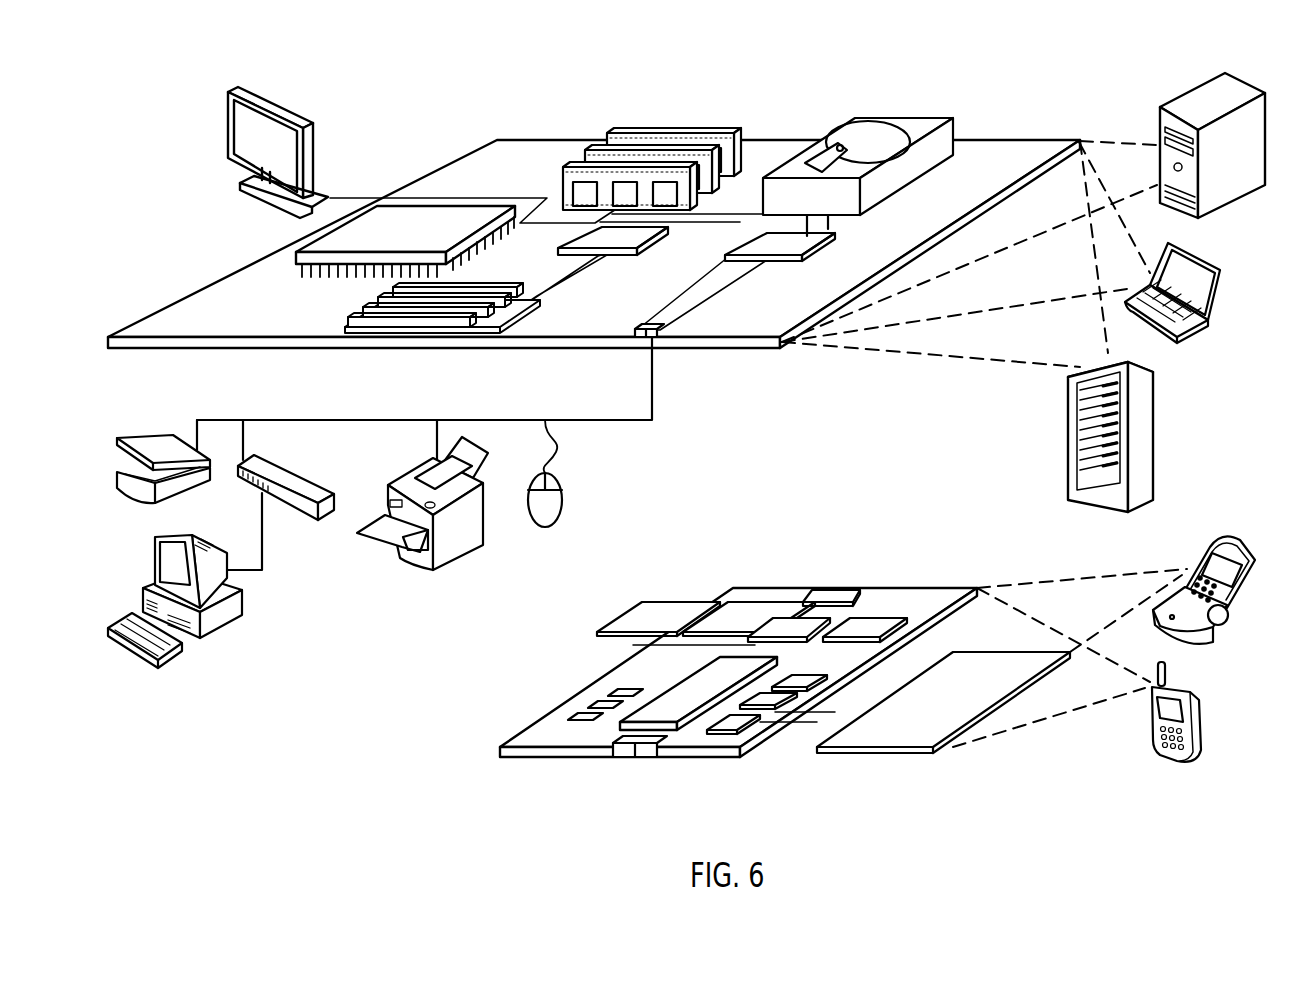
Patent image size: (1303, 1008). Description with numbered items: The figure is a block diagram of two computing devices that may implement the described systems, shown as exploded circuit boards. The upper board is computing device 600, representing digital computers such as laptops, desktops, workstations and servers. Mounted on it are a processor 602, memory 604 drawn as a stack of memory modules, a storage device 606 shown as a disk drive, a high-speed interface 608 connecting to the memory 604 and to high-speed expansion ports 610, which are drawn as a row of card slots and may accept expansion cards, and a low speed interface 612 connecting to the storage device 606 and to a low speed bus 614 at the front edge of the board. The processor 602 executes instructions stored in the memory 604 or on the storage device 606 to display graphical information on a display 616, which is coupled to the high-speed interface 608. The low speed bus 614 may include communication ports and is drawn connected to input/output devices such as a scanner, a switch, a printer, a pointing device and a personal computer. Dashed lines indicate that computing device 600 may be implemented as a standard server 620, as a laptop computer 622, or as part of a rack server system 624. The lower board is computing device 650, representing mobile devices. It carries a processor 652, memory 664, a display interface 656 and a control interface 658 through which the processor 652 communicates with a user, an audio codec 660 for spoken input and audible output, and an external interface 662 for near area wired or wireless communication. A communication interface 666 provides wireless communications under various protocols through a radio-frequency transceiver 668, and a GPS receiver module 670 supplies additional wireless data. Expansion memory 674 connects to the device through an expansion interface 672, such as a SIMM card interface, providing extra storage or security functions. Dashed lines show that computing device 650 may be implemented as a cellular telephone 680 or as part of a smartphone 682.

The computing device 600 is at (420, 113).
The processor 602 is at (300, 256).
The memory 604 is at (622, 137).
The storage device 606 is at (855, 121).
The high-speed interface 608 is at (592, 240).
The high-speed expansion ports 610 is at (365, 311).
The low speed interface 612 is at (763, 243).
The low speed bus 614 is at (653, 338).
The display 616 is at (234, 92).
The standard server 620 is at (1158, 125).
The laptop computer 622 is at (1222, 270).
The rack server system 624 is at (1068, 460).
The computing device 650 is at (470, 762).
The processor 652 is at (672, 712).
The display interface 656 is at (740, 722).
The control interface 658 is at (773, 702).
The audio codec 660 is at (798, 683).
The external interface 662 is at (640, 750).
The memory 664 is at (585, 708).
The communication interface 666 is at (790, 625).
The transceiver 668 is at (866, 620).
The GPS receiver module 670 is at (840, 590).
The expansion interface 672 is at (714, 601).
The expansion memory 674 is at (648, 601).
The cellular telephone 680 is at (1197, 545).
The smartphone 682 is at (1147, 717).